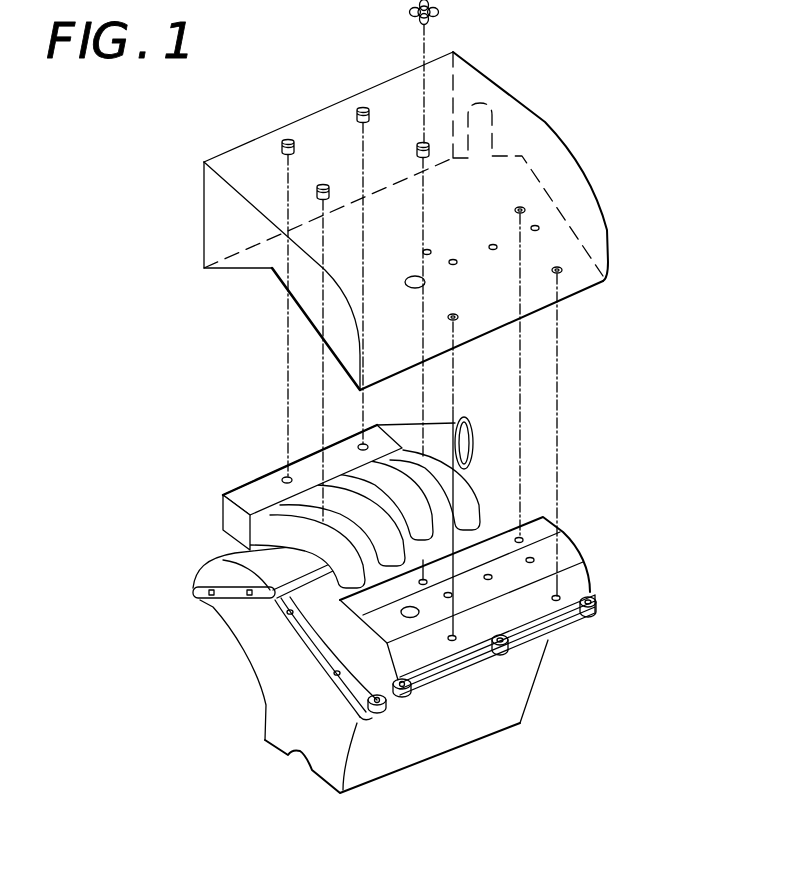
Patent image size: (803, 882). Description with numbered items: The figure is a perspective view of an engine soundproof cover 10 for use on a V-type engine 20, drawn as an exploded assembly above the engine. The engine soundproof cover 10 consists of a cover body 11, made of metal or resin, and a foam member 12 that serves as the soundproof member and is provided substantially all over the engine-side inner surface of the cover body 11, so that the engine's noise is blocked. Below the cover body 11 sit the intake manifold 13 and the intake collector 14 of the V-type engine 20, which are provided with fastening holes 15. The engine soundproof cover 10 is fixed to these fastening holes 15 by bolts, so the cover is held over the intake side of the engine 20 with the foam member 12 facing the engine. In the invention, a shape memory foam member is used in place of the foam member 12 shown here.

The engine soundproof cover 10 is at (622, 128).
The cover body 11 is at (517, 187).
The foam member 12 is at (343, 266).
The intake manifold 13 is at (452, 488).
The intake collector 14 is at (260, 491).
The fastening holes 15 is at (361, 445).
The V-type engine 20 is at (287, 686).